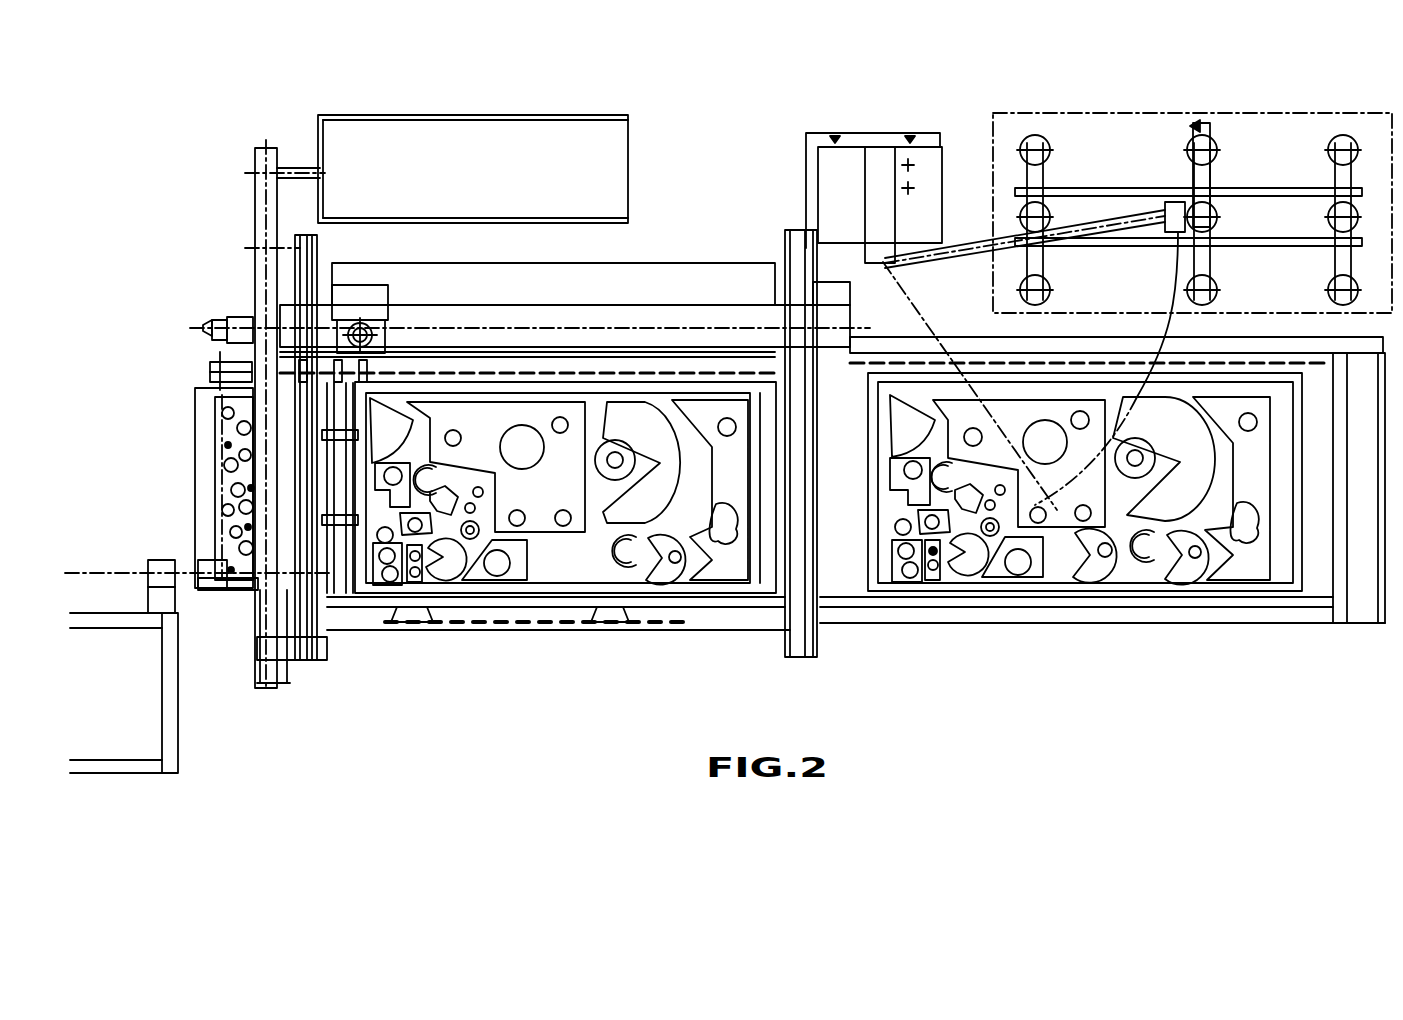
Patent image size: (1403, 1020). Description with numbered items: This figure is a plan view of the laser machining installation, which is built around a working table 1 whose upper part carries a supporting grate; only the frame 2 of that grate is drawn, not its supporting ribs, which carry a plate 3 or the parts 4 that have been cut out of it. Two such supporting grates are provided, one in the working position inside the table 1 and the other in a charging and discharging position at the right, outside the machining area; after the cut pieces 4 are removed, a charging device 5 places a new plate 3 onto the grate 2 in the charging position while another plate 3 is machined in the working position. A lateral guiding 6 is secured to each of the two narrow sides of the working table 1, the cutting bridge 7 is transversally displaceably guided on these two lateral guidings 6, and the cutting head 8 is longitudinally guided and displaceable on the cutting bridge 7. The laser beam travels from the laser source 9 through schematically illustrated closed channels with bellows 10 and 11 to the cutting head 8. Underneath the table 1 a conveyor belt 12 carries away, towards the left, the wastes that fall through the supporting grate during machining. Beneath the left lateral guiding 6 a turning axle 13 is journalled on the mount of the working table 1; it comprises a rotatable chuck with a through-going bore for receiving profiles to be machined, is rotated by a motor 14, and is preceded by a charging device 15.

The working table 1 is at (406, 642).
The frame of supporting grate 2 is at (682, 597).
The plate 3 is at (1253, 110).
The parts 4 is at (531, 577).
The charging device 5 is at (970, 108).
The lateral guiding 6 is at (318, 652).
The cutting bridge 7 is at (672, 318).
The cutting head 8 is at (385, 335).
The laser source 9 is at (510, 145).
The bellows 10 is at (260, 205).
The bellows 11 is at (490, 362).
The conveyor belt 12 is at (205, 463).
The turning axle 13 is at (293, 593).
The motor 14 is at (258, 585).
The charging device 15 is at (85, 545).